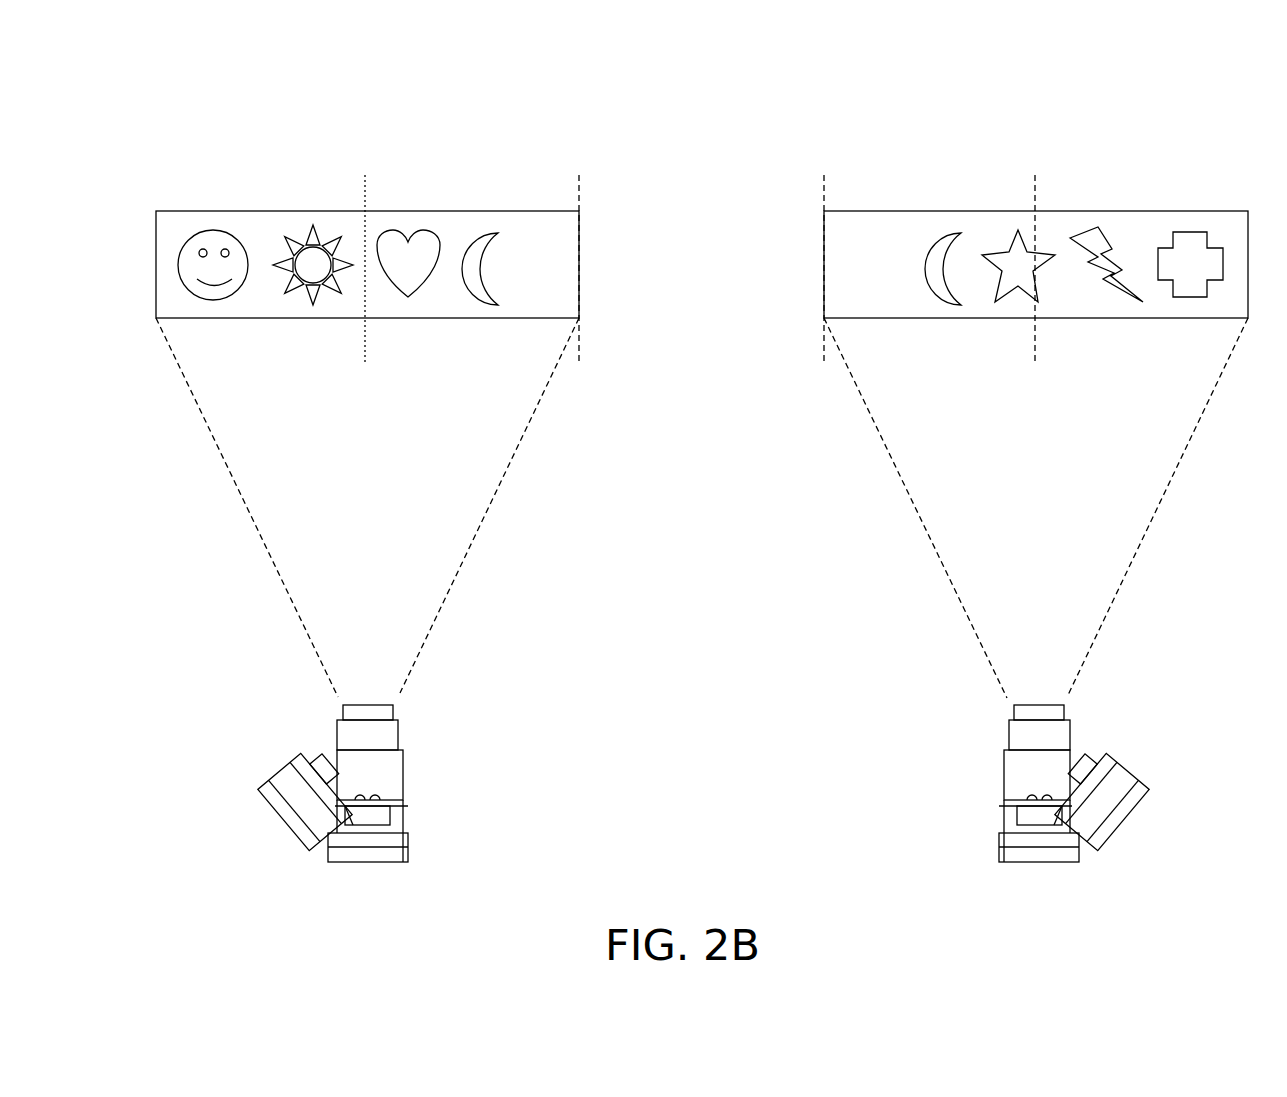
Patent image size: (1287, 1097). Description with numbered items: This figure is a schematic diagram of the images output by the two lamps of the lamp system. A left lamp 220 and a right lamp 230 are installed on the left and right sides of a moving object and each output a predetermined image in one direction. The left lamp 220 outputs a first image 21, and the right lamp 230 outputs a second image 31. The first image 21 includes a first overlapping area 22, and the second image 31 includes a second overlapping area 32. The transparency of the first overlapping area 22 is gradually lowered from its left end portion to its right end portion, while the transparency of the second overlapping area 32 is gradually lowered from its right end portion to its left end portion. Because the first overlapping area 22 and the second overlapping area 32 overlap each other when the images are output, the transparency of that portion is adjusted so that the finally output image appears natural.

The first image 21 is at (228, 170).
The first overlapping area 22 is at (457, 222).
The second image 31 is at (1166, 170).
The second overlapping area 32 is at (928, 222).
The left lamp 220 is at (463, 758).
The right lamp 230 is at (944, 758).